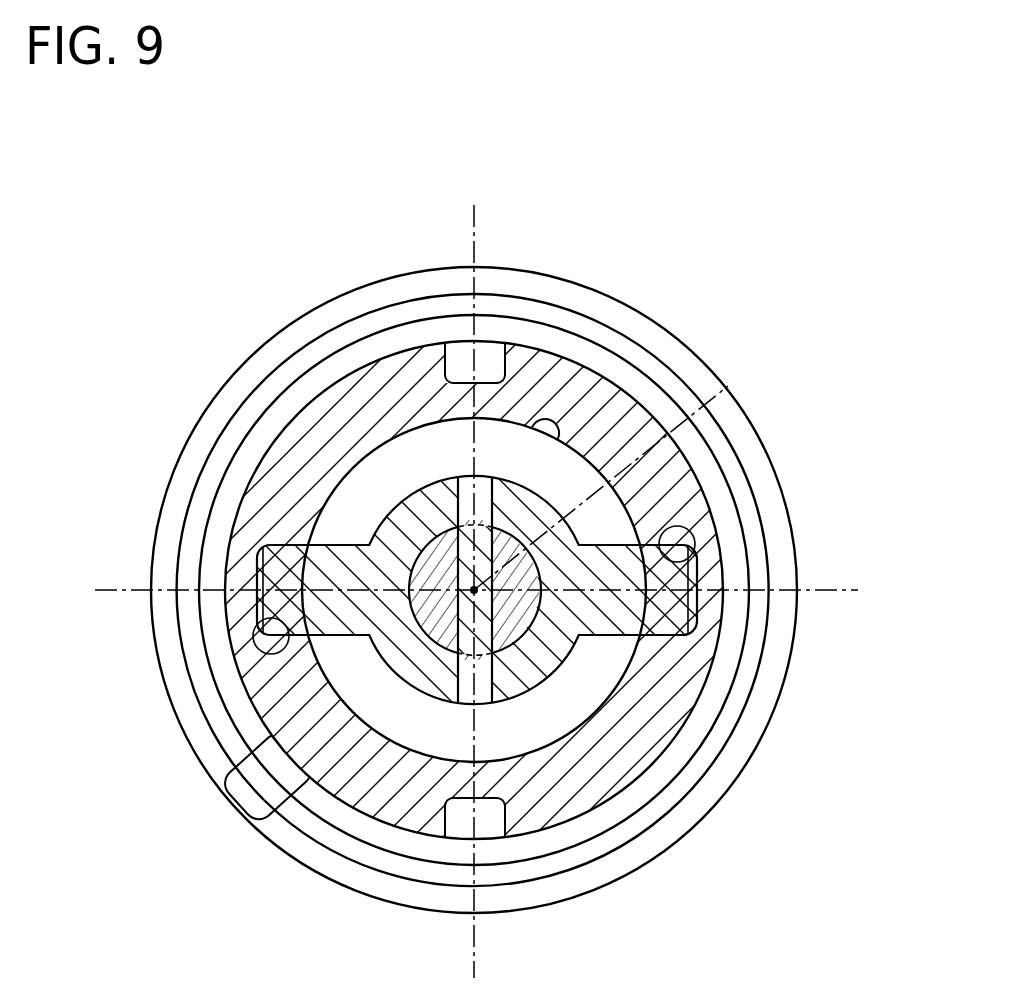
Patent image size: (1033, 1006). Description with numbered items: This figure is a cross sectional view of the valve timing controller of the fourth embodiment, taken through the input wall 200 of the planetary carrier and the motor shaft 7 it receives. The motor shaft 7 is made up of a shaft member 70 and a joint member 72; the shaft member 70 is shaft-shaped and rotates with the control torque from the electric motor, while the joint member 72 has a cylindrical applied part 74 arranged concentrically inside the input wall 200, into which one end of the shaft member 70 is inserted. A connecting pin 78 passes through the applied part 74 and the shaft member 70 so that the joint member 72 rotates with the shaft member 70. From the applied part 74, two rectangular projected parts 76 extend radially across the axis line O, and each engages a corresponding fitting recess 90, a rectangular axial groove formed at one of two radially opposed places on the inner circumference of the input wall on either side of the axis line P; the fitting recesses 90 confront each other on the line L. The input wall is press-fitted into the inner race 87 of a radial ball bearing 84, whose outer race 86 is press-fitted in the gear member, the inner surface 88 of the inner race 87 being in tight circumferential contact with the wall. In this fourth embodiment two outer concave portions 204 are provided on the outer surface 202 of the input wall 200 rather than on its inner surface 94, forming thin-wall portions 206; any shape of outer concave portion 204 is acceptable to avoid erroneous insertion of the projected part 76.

The motor shaft 7 is at (785, 845).
The shaft member 70 is at (516, 503).
The joint member 72 is at (498, 650).
The applied part 74 is at (720, 750).
The projected part 76 is at (290, 552).
The connecting pin 78 is at (483, 678).
The radial ball bearing 84 is at (211, 212).
The outer race 86 is at (323, 308).
The inner race 87 is at (316, 380).
The inner surface 88 is at (290, 817).
The fitting recess 90 is at (280, 654).
The inner surface 94 is at (542, 435).
The input wall 200 is at (297, 435).
The outer surface 202 is at (222, 785).
The outer concave portion 204 is at (462, 372).
The thin-wall portion 206 is at (488, 372).
The line L is at (828, 590).
The axis line O is at (642, 591).
The axis line P is at (725, 387).